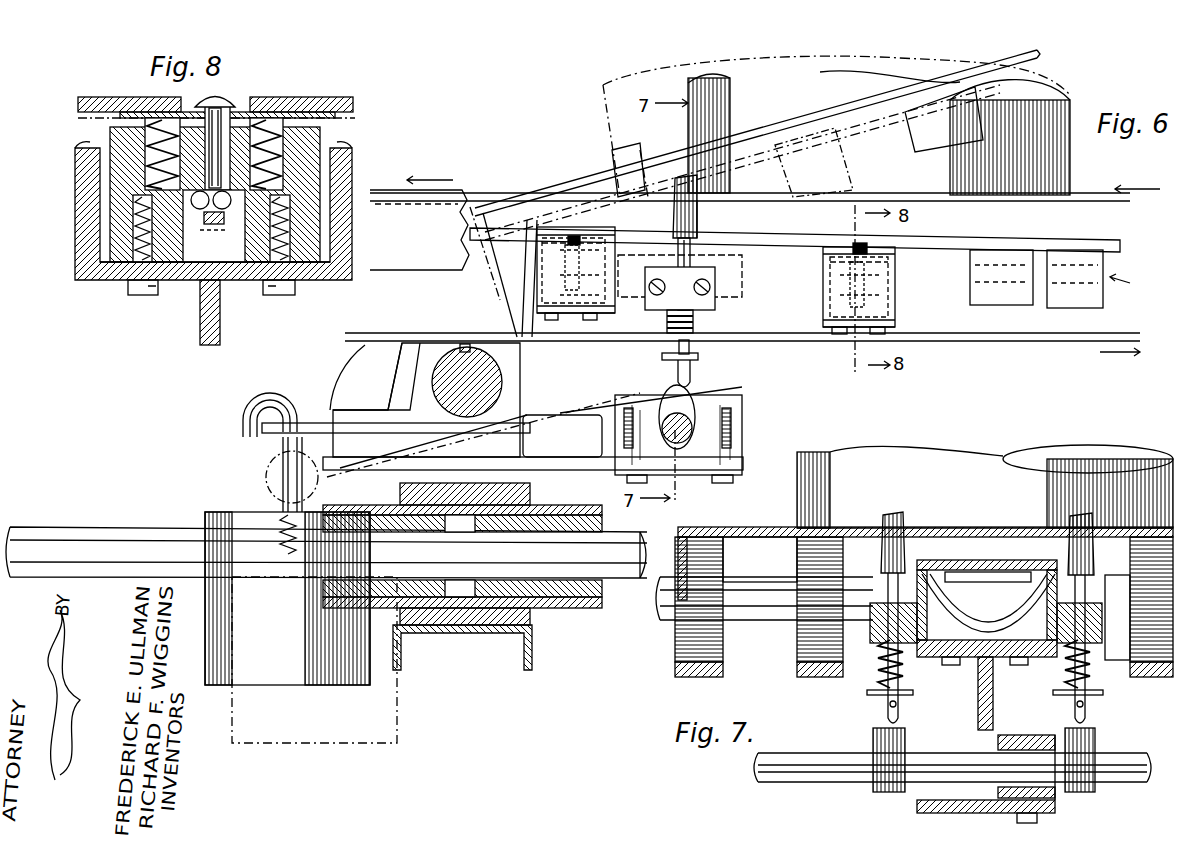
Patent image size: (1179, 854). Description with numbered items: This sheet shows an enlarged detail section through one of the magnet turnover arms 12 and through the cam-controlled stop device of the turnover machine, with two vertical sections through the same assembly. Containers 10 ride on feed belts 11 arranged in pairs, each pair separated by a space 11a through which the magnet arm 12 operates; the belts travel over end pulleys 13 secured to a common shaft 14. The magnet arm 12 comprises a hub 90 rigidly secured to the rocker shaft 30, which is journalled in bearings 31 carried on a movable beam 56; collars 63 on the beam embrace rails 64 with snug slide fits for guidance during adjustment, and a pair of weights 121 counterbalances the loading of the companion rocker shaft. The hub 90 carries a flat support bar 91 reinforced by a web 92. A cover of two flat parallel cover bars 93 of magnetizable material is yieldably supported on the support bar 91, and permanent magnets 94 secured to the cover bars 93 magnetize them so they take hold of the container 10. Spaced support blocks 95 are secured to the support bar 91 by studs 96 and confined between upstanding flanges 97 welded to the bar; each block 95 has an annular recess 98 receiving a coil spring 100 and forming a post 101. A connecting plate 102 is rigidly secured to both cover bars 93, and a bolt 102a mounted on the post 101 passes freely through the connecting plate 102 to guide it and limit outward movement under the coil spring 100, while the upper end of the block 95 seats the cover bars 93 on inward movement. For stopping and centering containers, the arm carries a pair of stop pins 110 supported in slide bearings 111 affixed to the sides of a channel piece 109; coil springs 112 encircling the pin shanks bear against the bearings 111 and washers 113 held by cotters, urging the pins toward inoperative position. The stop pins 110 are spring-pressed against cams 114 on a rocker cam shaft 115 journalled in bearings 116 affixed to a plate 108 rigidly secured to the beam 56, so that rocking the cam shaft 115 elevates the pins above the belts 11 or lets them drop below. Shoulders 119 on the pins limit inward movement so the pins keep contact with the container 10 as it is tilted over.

In FIG. 6, the container 10 is at (603, 85).
In FIG. 7, the container 10 is at (797, 465).
In FIG. 6, the feed belt 11 is at (393, 333).
In FIG. 7, the feed belt 11 is at (790, 528).
In FIG. 7, the space 11a is at (924, 537).
In FIG. 6, the magnet turnover arm 12 is at (1132, 281).
In FIG. 7, the end pulley 13 is at (680, 650).
In FIG. 7, the common shaft 14 is at (662, 600).
In FIG. 6, the rocker shaft 30 is at (432, 387).
In FIG. 6, the bearing 31 is at (400, 366).
In FIG. 6, the movable beam 56 is at (460, 634).
In FIG. 6, the collar 63 is at (545, 608).
In FIG. 6, the rail 64 is at (101, 525).
In FIG. 6, the hub 90 is at (528, 440).
In FIG. 8, the support bar 91 is at (95, 278).
In FIG. 6, the support bar 91 is at (823, 308).
In FIG. 7, the support bar 91 is at (948, 666).
In FIG. 8, the web 92 is at (205, 335).
In FIG. 6, the web 92 is at (845, 268).
In FIG. 7, the web 92 is at (978, 705).
In FIG. 8, the cover bar 93 is at (100, 97).
In FIG. 6, the cover bar 93 is at (1040, 105).
In FIG. 7, the cover bar 93 is at (976, 564).
In FIG. 6, the permanent magnet 94 is at (640, 280).
In FIG. 7, the permanent magnet 94 is at (988, 603).
In FIG. 8, the support block 95 is at (352, 133).
In FIG. 6, the support block 95 is at (853, 168).
In FIG. 7, the support block 95 is at (1040, 665).
In FIG. 8, the stud 96 is at (143, 292).
In FIG. 6, the stud 96 is at (590, 321).
In FIG. 7, the stud 96 is at (1021, 666).
In FIG. 8, the upstanding flange 97 is at (75, 185).
In FIG. 6, the upstanding flange 97 is at (537, 268).
In FIG. 8, the annular recess 98 is at (147, 135).
In FIG. 8, the coil spring 100 is at (150, 160).
In FIG. 6, the coil spring 100 is at (888, 278).
In FIG. 8, the post 101 is at (240, 130).
In FIG. 8, the connecting plate 102 is at (150, 117).
In FIG. 6, the connecting plate 102 is at (990, 250).
In FIG. 8, the bolt 102a is at (226, 106).
In FIG. 6, the bolt 102a is at (620, 166).
In FIG. 6, the plate 108 is at (742, 462).
In FIG. 7, the plate 108 is at (917, 809).
In FIG. 6, the channel piece 109 is at (702, 264).
In FIG. 7, the channel piece 109 is at (1016, 568).
In FIG. 6, the stop pin 110 is at (612, 150).
In FIG. 7, the stop pin 110 is at (904, 516).
In FIG. 6, the slide bearing 111 is at (716, 296).
In FIG. 7, the slide bearing 111 is at (880, 662).
In FIG. 6, the coil spring 112 is at (694, 322).
In FIG. 7, the coil spring 112 is at (867, 692).
In FIG. 6, the washer 113 is at (666, 358).
In FIG. 7, the washer 113 is at (880, 712).
In FIG. 6, the cam 114 is at (692, 380).
In FIG. 7, the cam 114 is at (873, 740).
In FIG. 6, the rocker cam shaft 115 is at (695, 417).
In FIG. 7, the rocker cam shaft 115 is at (758, 766).
In FIG. 6, the bearing 116 is at (742, 433).
In FIG. 7, the bearing 116 is at (998, 743).
In FIG. 6, the shoulder 119 is at (697, 226).
In FIG. 7, the shoulder 119 is at (843, 592).
In FIG. 6, the weight 121 is at (291, 686).